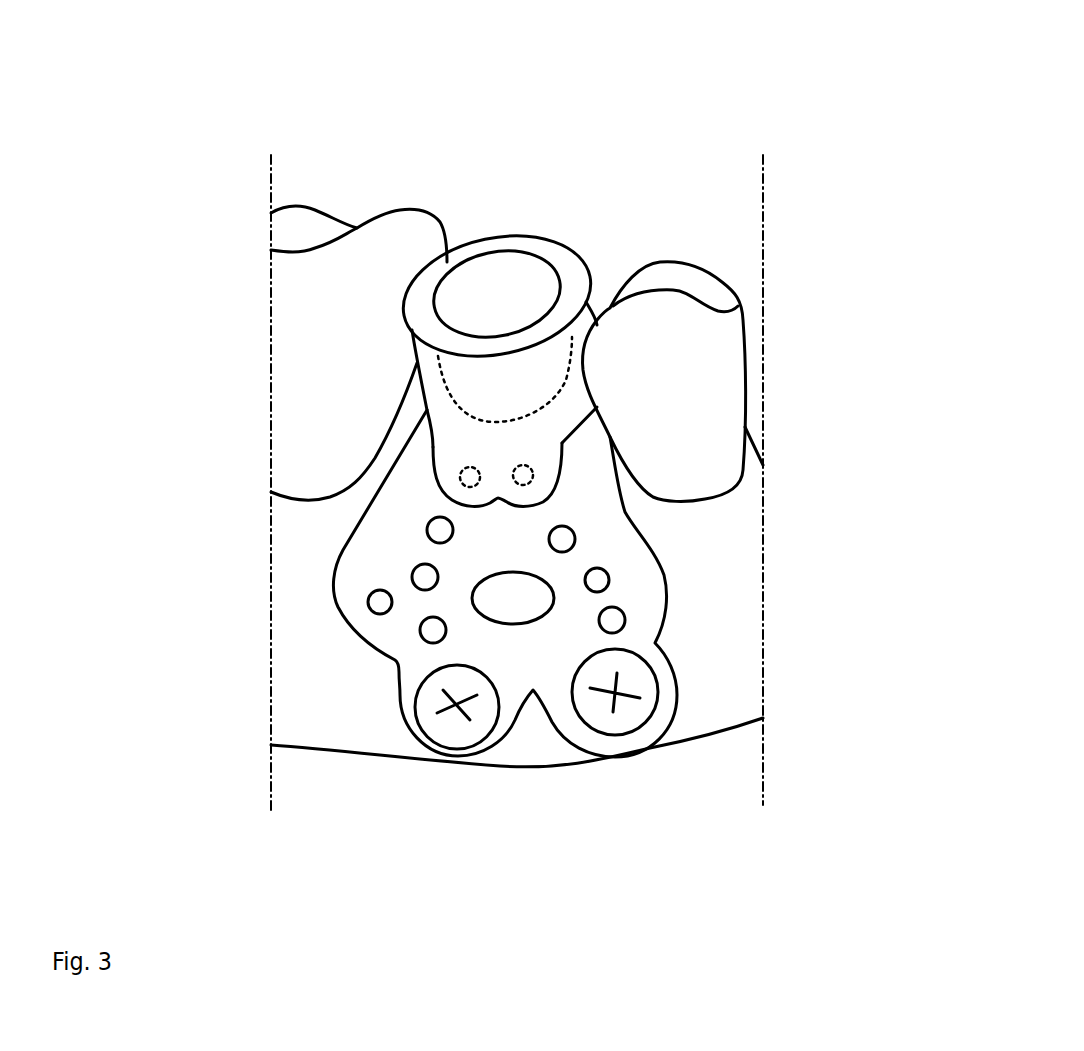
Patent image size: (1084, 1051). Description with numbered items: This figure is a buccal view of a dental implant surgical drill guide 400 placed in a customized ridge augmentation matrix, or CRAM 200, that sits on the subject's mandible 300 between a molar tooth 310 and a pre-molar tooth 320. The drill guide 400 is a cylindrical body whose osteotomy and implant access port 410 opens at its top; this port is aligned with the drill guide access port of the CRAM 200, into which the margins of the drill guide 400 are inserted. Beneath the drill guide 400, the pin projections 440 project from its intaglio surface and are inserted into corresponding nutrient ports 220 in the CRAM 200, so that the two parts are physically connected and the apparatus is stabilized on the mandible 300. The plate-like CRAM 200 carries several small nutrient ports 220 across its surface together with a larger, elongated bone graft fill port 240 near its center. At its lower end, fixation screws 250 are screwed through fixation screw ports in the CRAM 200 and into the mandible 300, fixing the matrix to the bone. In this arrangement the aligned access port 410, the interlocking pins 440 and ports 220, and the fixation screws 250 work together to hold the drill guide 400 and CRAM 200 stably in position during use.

The customized ridge augmentation matrix (CRAM) 200 is at (621, 694).
The nutrient ports 220 is at (562, 539).
The bone graft fill port 240 is at (525, 607).
The fixation screws 250 is at (457, 697).
The mandible 300 is at (295, 597).
The molar tooth 310 is at (376, 262).
The pre-molar tooth 320 is at (668, 347).
The dental implant surgical drill guide 400 is at (367, 258).
The osteotomy and implant access port 410 is at (497, 290).
The pin projections 440 is at (460, 486).